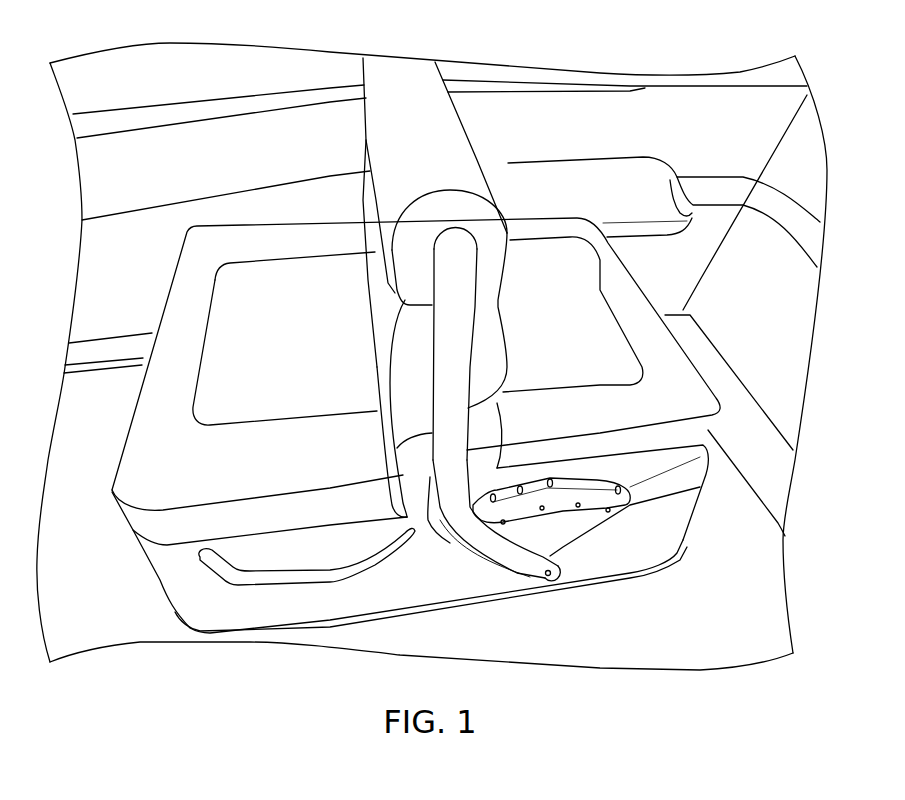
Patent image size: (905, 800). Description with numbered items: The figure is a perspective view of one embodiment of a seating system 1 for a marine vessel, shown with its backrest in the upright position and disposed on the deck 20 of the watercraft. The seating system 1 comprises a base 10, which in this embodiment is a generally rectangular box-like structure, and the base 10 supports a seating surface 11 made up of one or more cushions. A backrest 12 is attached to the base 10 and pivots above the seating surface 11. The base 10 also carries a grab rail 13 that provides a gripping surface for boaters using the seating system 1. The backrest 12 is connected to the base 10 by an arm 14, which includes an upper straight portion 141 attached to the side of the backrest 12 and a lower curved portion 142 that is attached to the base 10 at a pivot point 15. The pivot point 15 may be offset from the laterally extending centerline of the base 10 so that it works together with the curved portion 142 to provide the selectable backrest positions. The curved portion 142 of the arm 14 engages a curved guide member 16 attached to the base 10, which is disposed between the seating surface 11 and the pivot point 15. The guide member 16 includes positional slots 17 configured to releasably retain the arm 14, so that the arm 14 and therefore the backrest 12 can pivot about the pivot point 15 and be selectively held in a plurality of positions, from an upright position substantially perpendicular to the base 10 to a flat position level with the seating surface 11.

The seating system 1 is at (630, 218).
The base 10 is at (673, 523).
The seating surface 11 is at (620, 277).
The backrest 12 is at (398, 73).
The grab rail 13 is at (222, 573).
The arm 14 is at (450, 505).
The upper straight portion 141 is at (450, 380).
The lower curved portion 142 is at (495, 555).
The pivot point 15 is at (548, 576).
The curved guide member 16 is at (557, 497).
The positional slot 17 is at (608, 511).
The deck 20 is at (77, 434).